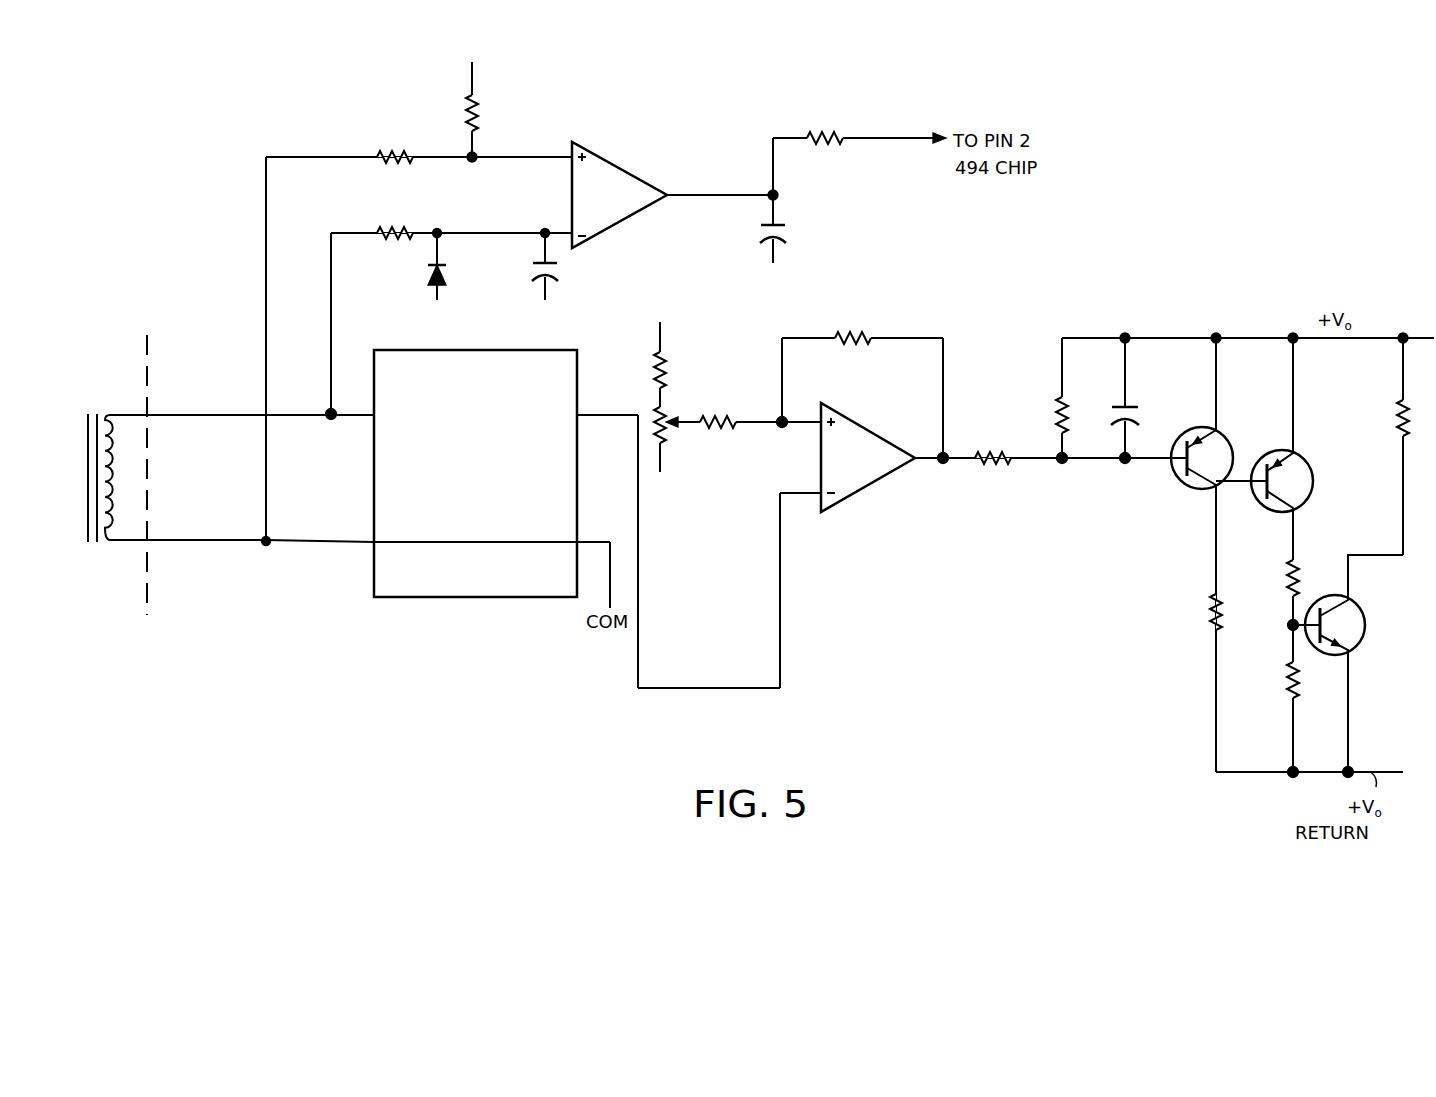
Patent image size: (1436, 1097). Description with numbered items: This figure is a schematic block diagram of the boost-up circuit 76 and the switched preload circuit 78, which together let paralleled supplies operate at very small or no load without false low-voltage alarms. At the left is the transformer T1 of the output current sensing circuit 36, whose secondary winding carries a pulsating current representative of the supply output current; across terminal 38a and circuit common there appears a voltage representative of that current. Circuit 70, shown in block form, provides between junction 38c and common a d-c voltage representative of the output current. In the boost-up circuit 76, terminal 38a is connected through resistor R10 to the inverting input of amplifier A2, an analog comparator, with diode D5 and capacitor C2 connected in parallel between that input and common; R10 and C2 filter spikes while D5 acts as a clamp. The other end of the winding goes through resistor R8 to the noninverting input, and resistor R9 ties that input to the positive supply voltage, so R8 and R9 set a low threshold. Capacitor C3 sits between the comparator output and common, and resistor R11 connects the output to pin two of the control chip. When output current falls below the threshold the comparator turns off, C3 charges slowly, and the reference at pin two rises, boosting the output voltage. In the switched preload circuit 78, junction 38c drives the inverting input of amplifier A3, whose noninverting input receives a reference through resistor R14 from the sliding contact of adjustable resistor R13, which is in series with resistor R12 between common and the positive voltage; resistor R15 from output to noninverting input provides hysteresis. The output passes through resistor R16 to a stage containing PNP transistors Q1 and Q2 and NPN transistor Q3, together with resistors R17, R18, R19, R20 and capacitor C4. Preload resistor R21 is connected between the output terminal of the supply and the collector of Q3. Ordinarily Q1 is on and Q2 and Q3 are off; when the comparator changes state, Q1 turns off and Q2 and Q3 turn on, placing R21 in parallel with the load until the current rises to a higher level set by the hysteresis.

The output current sensing circuit 36 is at (76, 381).
The transformer T1 is at (95, 466).
The terminal 38a is at (331, 416).
The junction 38c is at (602, 416).
The circuit 70 is at (500, 431).
The boost-up circuit 76 is at (608, 117).
The switched preload circuit 78 is at (1004, 636).
The amplifier A2 is at (619, 195).
The amplifier A3 is at (868, 457).
The resistor R8 is at (393, 146).
The resistor R9 is at (479, 98).
The resistor R10 is at (393, 222).
The resistor R11 is at (859, 124).
The resistor R12 is at (673, 353).
The adjustable resistor R13 is at (665, 440).
The resistor R14 is at (760, 408).
The resistor R15 is at (862, 383).
The resistor R16 is at (994, 447).
The resistor R17 is at (1036, 401).
The resistor R18 is at (1189, 612).
The resistor R19 is at (1314, 611).
The resistor R20 is at (1266, 720).
The preload resistor R21 is at (1376, 446).
The capacitor C2 is at (557, 281).
The capacitor C3 is at (786, 253).
The capacitor C4 is at (1142, 401).
The diode D5 is at (445, 281).
The PNP transistor Q1 is at (1216, 555).
The PNP transistor Q2 is at (1280, 449).
The NPN transistor Q3 is at (1348, 666).